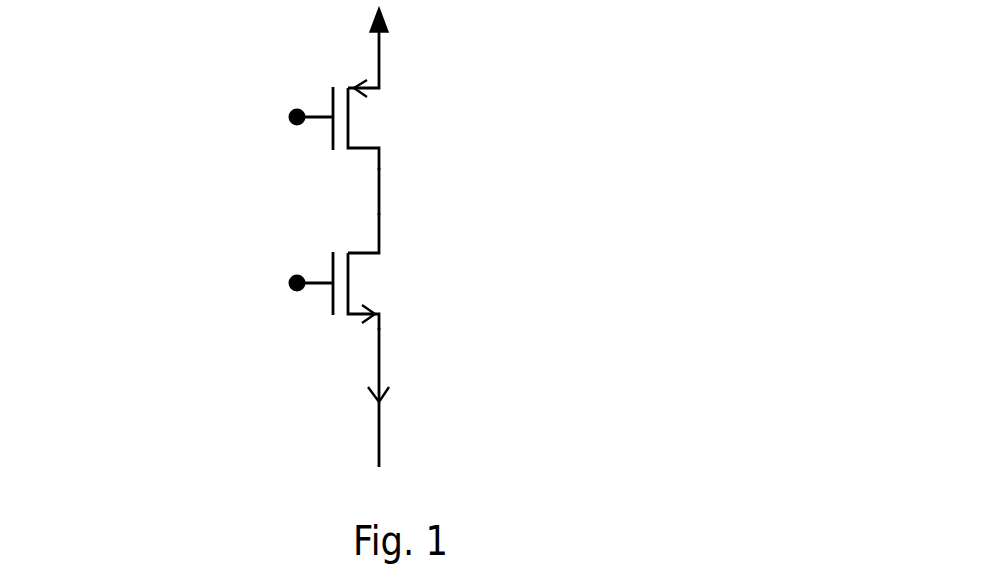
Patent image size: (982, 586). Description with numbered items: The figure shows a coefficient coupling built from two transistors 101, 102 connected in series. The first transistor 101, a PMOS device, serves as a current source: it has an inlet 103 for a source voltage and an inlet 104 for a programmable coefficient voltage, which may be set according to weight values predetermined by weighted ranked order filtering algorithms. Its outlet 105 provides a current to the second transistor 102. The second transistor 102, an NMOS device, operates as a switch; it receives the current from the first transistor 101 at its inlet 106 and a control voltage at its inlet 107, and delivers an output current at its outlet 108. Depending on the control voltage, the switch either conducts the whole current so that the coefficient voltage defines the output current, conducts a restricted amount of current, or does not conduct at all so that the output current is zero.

The first transistor 101 is at (378, 115).
The second transistor 102 is at (378, 282).
The inlet for a source voltage 103 is at (378, 70).
The inlet for a coefficient voltage 104 is at (289, 118).
The outlet 105 is at (378, 175).
The inlet for the current 106 is at (378, 237).
The inlet for a control voltage 107 is at (289, 284).
The outlet for an output current 108 is at (378, 335).